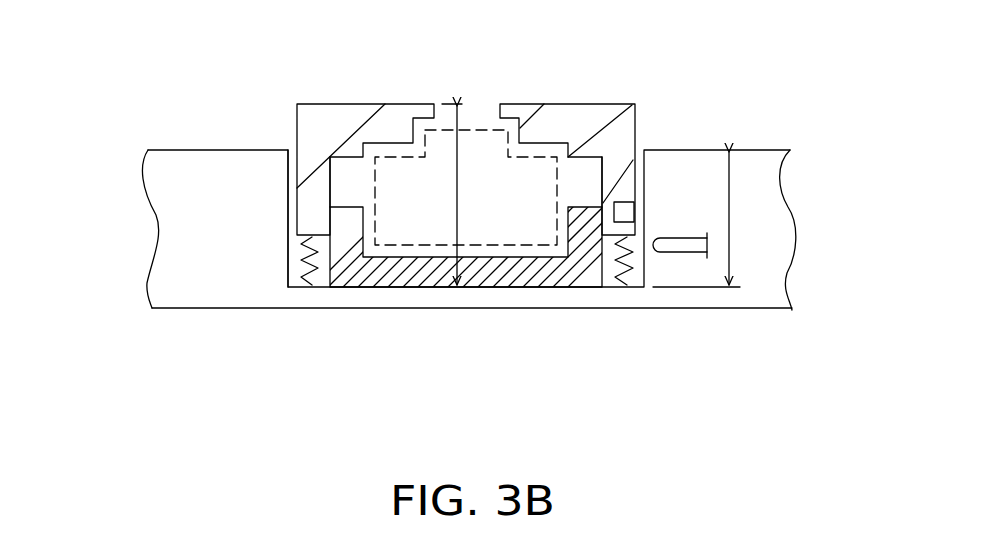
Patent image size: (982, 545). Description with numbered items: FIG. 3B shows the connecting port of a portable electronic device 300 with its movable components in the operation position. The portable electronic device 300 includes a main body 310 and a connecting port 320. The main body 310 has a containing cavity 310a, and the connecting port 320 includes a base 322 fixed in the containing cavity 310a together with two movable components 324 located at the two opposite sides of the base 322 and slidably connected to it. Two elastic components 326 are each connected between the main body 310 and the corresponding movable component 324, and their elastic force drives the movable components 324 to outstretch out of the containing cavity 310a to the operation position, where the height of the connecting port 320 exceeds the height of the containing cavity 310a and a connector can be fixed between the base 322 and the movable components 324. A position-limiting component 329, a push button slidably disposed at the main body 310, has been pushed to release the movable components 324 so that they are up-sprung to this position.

The portable electronic device 300 is at (800, 396).
The main body 310 is at (772, 253).
The containing cavity 310a is at (293, 173).
The connecting port 320 is at (407, 208).
The base 322 is at (435, 277).
The movable component 324 is at (300, 208).
The elastic component 326 is at (312, 284).
The position-limiting component 329 is at (678, 247).